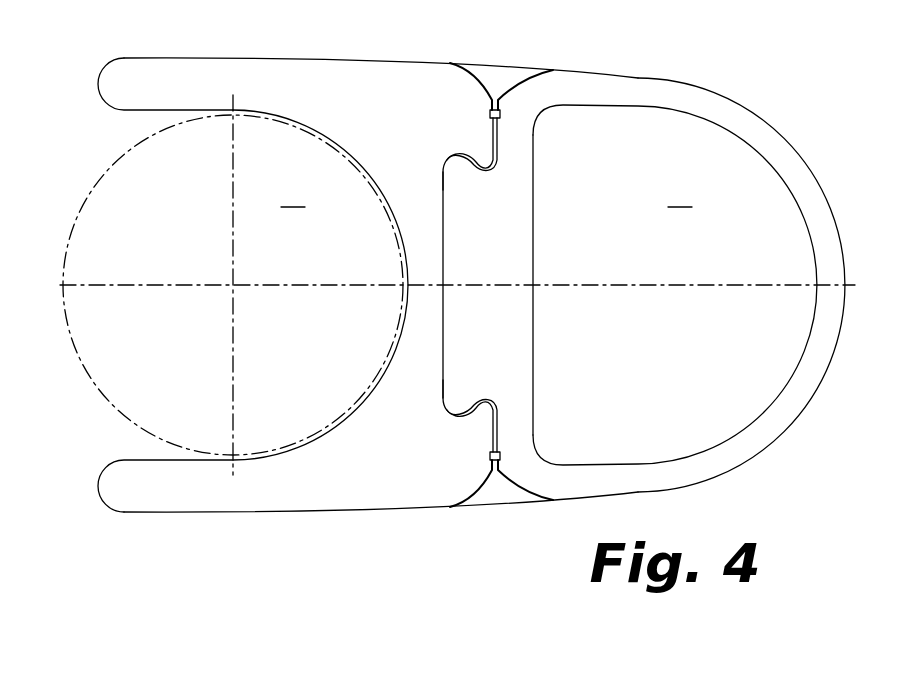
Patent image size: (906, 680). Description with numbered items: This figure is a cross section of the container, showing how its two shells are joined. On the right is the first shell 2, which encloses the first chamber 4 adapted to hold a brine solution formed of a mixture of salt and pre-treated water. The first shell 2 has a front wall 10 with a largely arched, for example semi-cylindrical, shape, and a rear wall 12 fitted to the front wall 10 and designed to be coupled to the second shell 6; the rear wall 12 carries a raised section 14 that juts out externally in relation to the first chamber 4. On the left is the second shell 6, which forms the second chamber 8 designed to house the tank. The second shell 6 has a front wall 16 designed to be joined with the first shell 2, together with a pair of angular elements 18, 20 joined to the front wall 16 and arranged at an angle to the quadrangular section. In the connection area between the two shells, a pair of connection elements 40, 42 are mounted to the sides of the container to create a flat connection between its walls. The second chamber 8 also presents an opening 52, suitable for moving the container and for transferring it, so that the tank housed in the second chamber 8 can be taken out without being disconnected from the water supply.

The first shell 2 is at (477, 312).
The first chamber 4 is at (680, 293).
The second shell 6 is at (140, 515).
The second chamber 8 is at (293, 189).
The front wall 10 is at (820, 229).
The rear wall 12 is at (550, 347).
The raised section 14 is at (448, 249).
The front wall 16 is at (400, 312).
The angular element 18 is at (477, 423).
The angular element 20 is at (480, 147).
The connection element 40 is at (497, 80).
The connection element 42 is at (497, 488).
The opening 52 is at (143, 210).